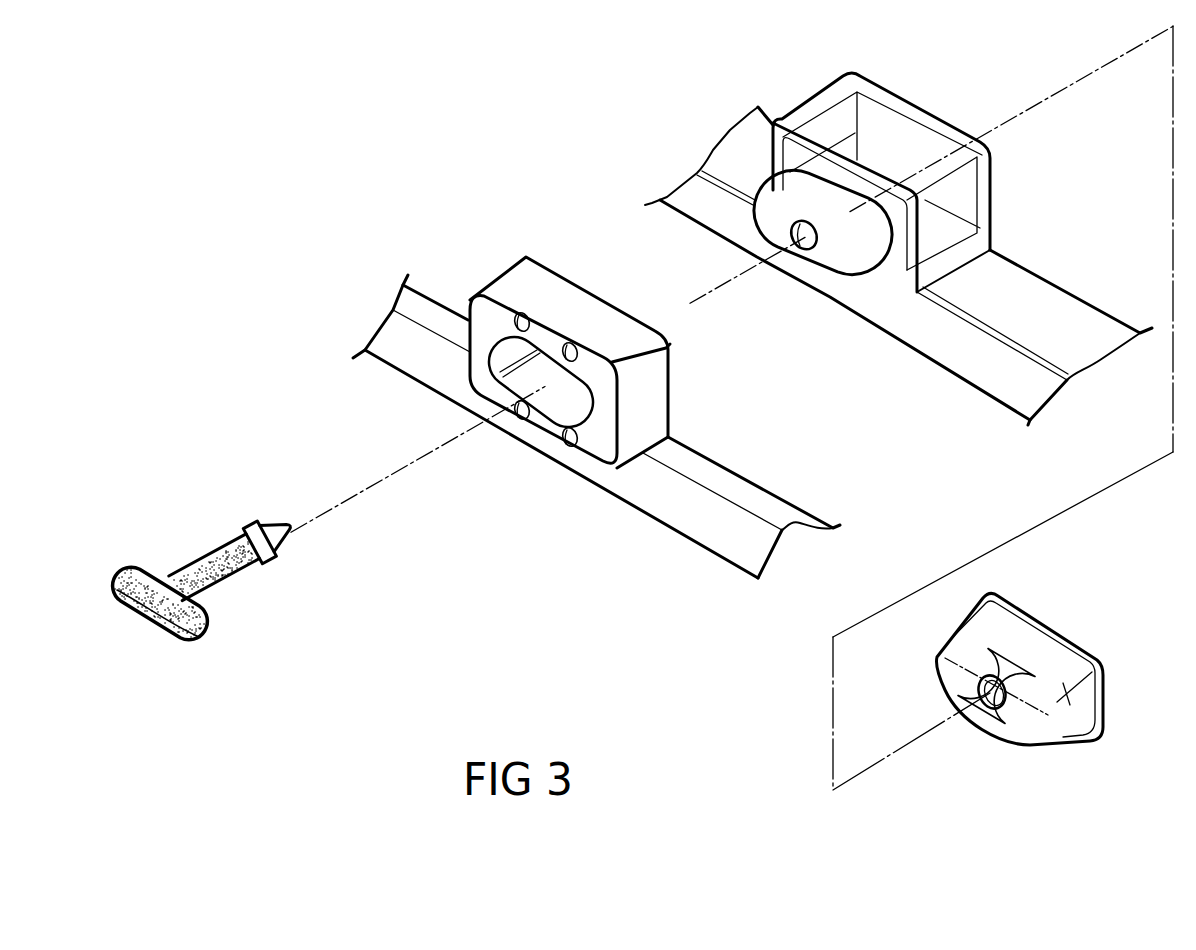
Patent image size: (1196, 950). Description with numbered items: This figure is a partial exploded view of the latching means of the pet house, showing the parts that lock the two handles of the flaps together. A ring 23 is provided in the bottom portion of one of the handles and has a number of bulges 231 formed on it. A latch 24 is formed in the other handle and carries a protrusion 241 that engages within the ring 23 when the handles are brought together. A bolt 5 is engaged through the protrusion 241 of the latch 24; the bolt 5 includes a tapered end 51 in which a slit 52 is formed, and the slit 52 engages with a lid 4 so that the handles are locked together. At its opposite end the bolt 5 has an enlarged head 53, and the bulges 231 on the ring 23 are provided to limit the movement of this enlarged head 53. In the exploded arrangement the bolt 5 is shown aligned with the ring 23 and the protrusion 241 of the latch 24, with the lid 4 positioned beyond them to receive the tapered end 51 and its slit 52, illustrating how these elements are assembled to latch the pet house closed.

The ring 23 is at (656, 418).
The bulges 231 is at (575, 347).
The latch 24 is at (815, 107).
The protrusion 241 is at (823, 262).
The lid 4 is at (1067, 733).
The bolt 5 is at (216, 582).
The tapered end 51 is at (273, 527).
The slit 52 is at (287, 550).
The enlarged head 53 is at (167, 638).